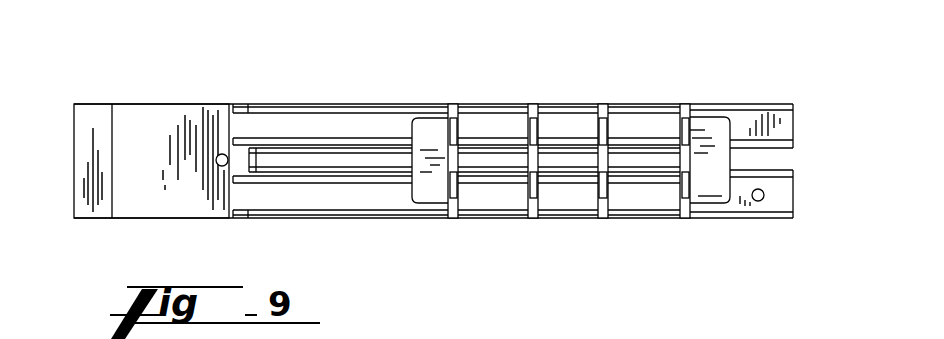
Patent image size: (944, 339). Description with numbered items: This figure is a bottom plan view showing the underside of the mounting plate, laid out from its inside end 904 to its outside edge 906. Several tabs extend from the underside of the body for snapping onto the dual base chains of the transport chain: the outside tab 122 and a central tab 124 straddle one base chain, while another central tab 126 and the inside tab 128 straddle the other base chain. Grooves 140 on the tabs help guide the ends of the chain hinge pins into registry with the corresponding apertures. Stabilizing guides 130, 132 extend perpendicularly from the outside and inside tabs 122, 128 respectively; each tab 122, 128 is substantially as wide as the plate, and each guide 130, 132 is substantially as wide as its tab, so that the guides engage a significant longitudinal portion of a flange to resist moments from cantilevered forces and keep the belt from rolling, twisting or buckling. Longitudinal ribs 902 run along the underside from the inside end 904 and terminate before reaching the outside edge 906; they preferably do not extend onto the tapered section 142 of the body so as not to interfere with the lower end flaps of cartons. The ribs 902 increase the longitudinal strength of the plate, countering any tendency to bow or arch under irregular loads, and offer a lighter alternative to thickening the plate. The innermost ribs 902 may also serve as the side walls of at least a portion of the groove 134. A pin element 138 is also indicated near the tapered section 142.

The outside tab 122 is at (453, 104).
The central tab 124 is at (531, 104).
The central tab 126 is at (603, 104).
The inside tab 128 is at (688, 104).
The guide 130 is at (441, 140).
The guide 132 is at (720, 190).
The groove 134 is at (790, 158).
The pivot pin 138 is at (224, 154).
The grooves 140 is at (460, 130).
The tapered section 142 is at (156, 160).
The longitudinal ribs 902 is at (290, 107).
The inside end 904 is at (808, 126).
The outside edge 906 is at (66, 137).